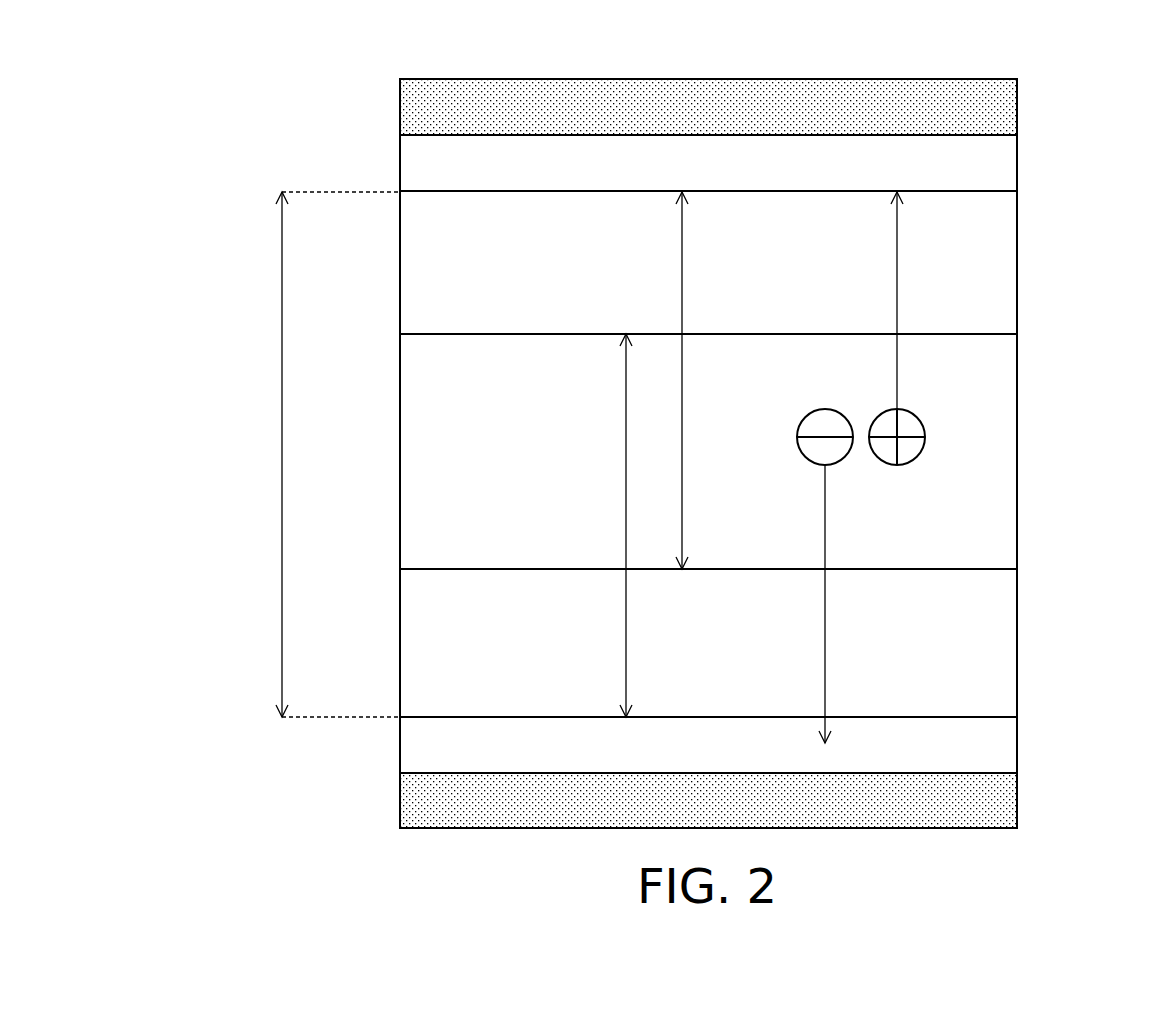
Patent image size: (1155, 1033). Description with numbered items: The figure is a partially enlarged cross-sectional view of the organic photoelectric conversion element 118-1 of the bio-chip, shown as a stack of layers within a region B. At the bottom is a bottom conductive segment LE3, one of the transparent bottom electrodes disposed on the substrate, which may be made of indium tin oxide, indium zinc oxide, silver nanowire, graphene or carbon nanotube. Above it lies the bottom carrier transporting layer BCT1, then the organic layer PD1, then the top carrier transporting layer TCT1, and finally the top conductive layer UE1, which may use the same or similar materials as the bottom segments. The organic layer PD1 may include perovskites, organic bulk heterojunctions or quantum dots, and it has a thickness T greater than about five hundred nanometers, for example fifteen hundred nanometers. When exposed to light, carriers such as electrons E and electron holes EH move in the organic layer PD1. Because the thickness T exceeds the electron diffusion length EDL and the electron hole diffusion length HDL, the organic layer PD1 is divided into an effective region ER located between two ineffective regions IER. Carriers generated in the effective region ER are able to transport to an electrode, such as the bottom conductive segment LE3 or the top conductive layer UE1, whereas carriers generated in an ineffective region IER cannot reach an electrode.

The organic photoelectric conversion element 118-1 is at (210, 30).
The region B is at (1046, 67).
The top conductive layer UE1 is at (422, 104).
The top carrier transporting layer TCT1 is at (424, 160).
The bottom carrier transporting layer BCT1 is at (424, 743).
The bottom conductive segment LE3 is at (424, 803).
The organic layer PD1 is at (398, 192).
The ineffective region IER is at (1020, 192).
The effective region ER is at (1020, 334).
The thickness T is at (328, 454).
The electron hole diffusion length HDL is at (683, 272).
The electron diffusion length EDL is at (624, 462).
The electron E is at (838, 465).
The electron hole EH is at (907, 465).